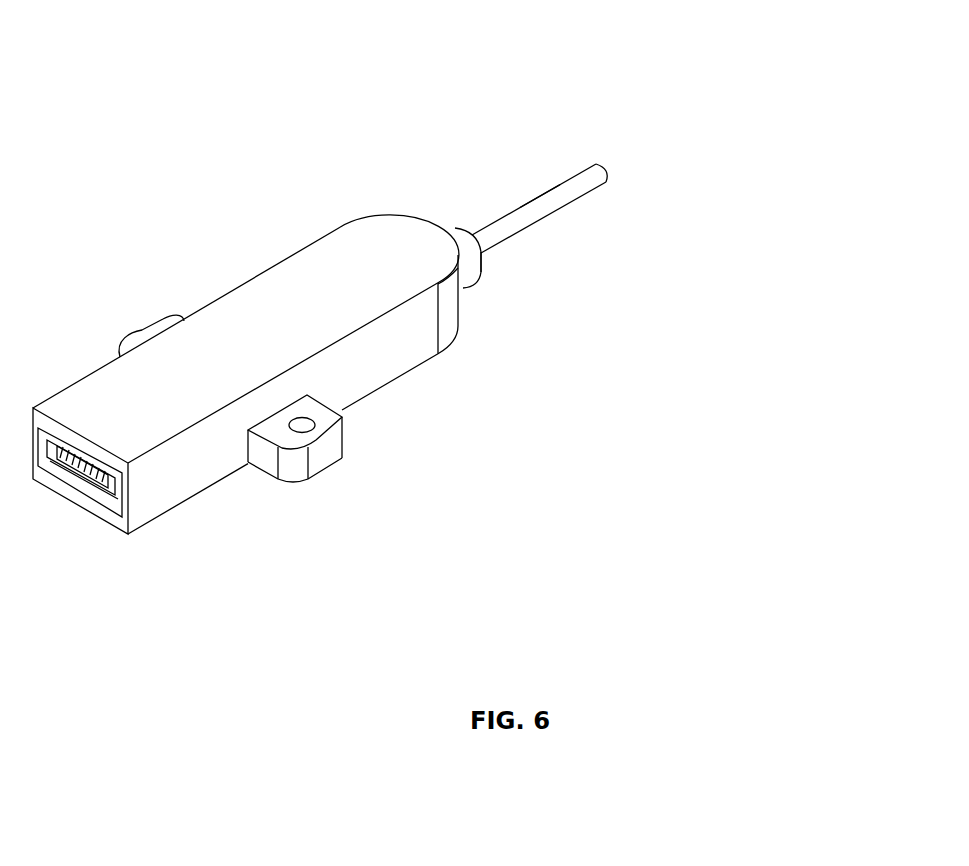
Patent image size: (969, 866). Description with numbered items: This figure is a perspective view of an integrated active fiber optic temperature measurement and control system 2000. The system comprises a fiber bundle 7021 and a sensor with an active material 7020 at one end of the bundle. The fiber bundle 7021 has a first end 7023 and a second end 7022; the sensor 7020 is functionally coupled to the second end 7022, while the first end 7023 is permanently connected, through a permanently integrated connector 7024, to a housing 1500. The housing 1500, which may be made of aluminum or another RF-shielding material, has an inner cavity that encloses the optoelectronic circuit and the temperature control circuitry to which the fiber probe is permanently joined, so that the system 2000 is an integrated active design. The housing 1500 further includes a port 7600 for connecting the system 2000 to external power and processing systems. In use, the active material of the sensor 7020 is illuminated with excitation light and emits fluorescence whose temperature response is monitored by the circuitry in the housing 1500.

The integrated active temperature measurement and control system 2000 is at (493, 51).
The housing 1500 is at (263, 355).
The port 7600 is at (88, 473).
The sensor with an active material 7020 is at (608, 165).
The second end 7022 is at (607, 178).
The fiber bundle 7021 is at (543, 203).
The first end 7023 is at (481, 250).
The permanently integrated connector 7024 is at (477, 263).